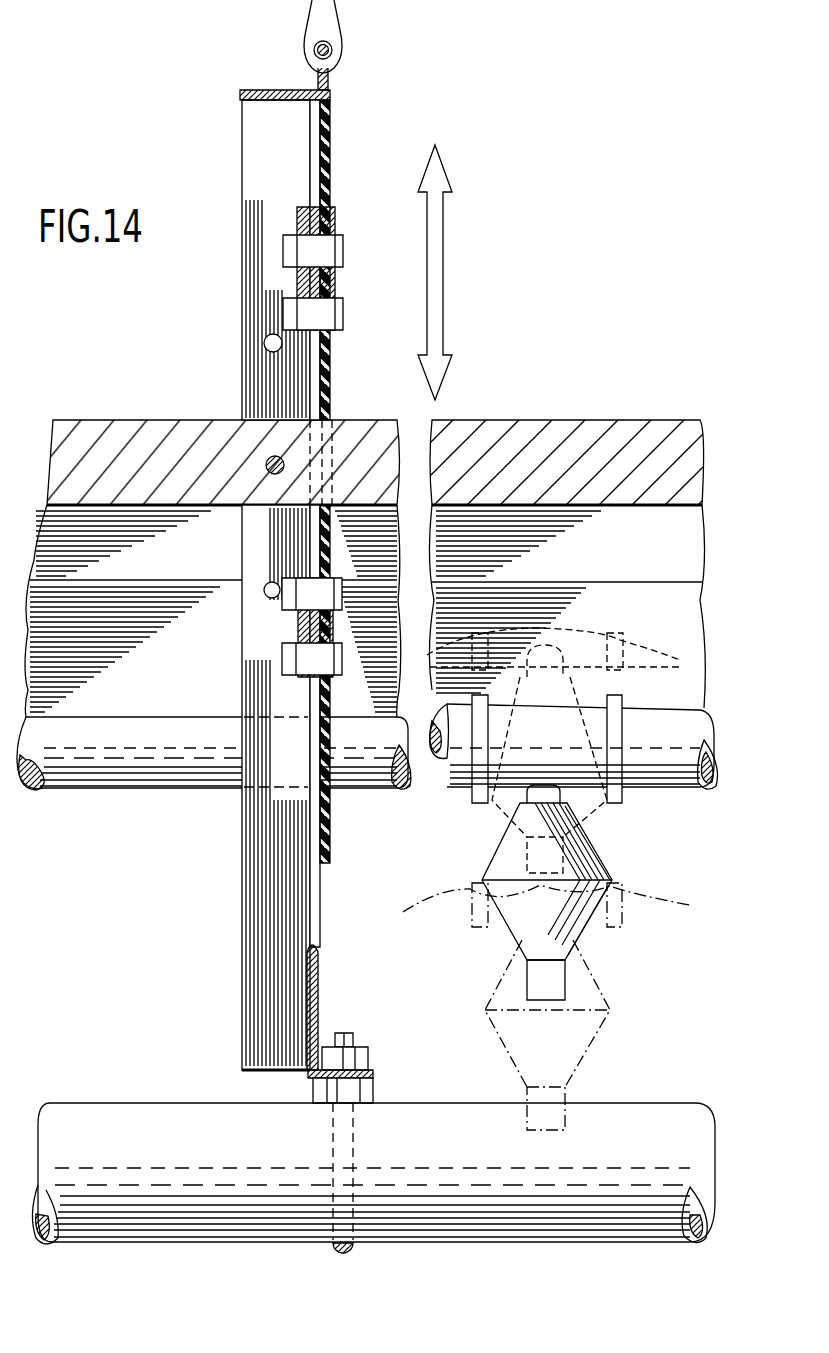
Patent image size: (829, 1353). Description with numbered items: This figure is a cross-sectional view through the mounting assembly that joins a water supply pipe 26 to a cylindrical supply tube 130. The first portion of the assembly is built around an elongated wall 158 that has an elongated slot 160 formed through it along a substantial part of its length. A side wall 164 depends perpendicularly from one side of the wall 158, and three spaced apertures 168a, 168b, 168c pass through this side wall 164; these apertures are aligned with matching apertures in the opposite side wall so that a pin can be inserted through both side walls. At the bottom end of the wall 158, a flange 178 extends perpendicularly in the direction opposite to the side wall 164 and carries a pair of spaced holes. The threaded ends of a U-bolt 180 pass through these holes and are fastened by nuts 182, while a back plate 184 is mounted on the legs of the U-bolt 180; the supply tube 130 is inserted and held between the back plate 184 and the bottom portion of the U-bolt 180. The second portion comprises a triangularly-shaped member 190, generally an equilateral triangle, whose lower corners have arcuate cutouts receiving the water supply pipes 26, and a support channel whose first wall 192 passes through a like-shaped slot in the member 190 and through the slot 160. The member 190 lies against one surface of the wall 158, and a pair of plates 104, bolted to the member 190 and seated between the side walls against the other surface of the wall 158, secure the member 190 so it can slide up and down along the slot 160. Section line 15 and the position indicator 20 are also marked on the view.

The section line 15- 15 is at (187, 110).
The nozzle 20 is at (583, 803).
The water supply pipe 26 is at (692, 726).
The plates 104 is at (298, 268).
The cylindrical supply tube 130 is at (650, 1105).
The elongated wall 158 is at (318, 993).
The elongated slot 160 is at (316, 930).
The side wall 164 is at (250, 872).
The aperture 168a is at (264, 343).
The aperture 168b is at (268, 458).
The aperture 168c is at (266, 592).
The flange 178 is at (373, 1074).
The U-bolt 180 is at (356, 1250).
The nuts 182 is at (345, 1056).
The back plate 184 is at (376, 1086).
The triangularly-shaped member 190 is at (333, 390).
The first wall 192 is at (65, 432).